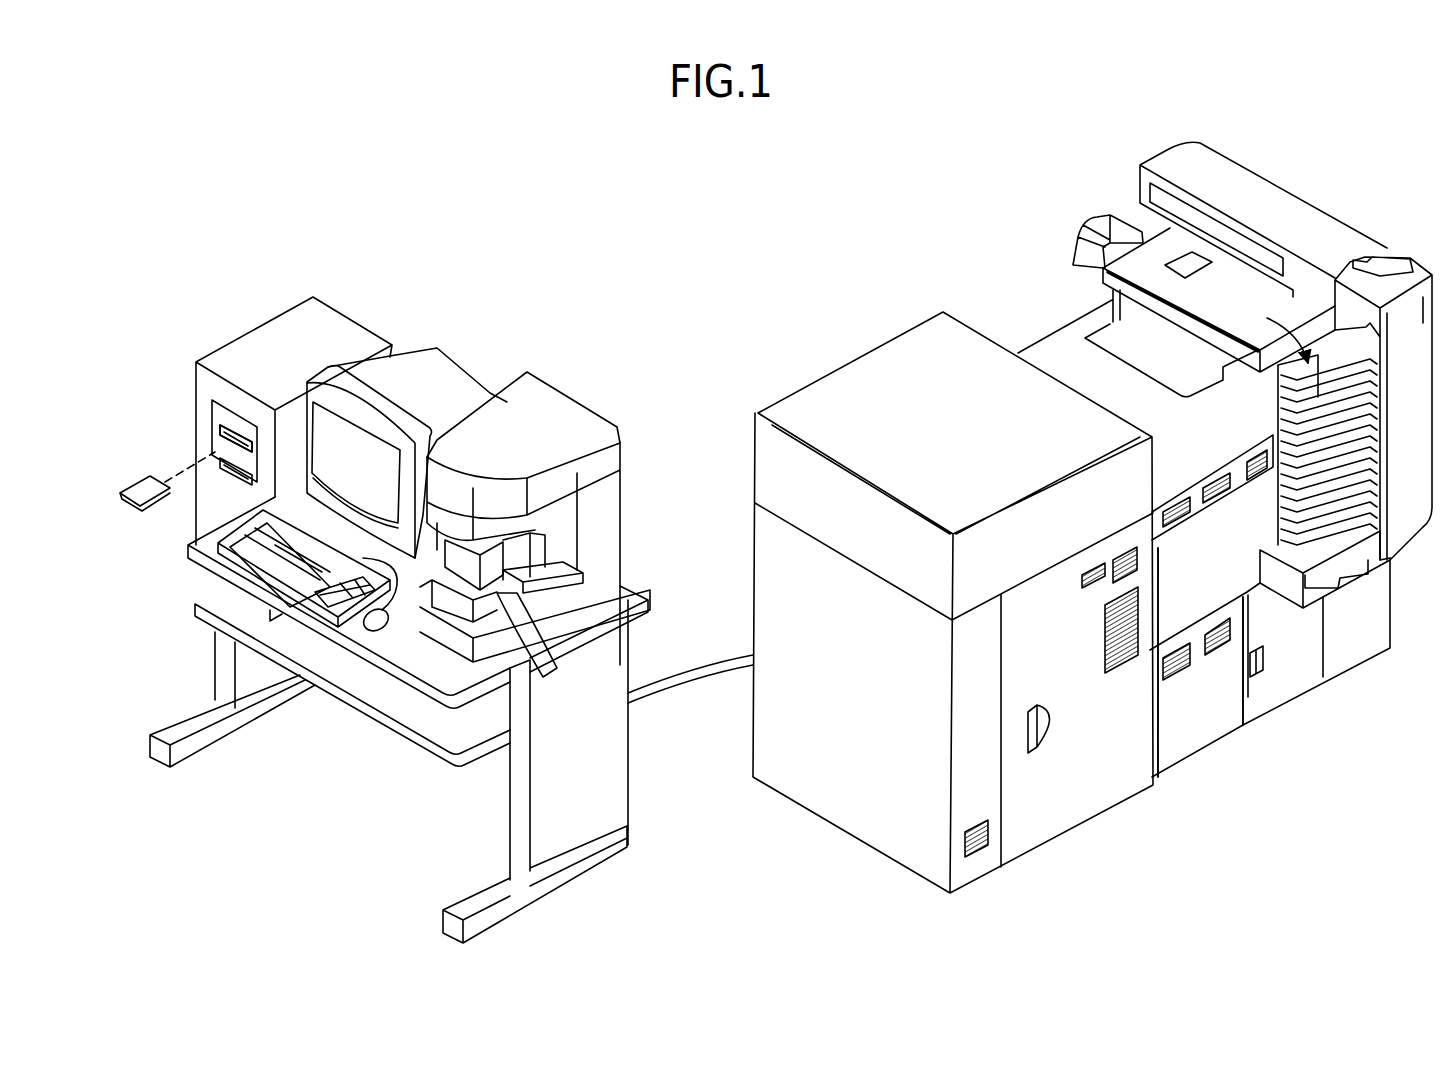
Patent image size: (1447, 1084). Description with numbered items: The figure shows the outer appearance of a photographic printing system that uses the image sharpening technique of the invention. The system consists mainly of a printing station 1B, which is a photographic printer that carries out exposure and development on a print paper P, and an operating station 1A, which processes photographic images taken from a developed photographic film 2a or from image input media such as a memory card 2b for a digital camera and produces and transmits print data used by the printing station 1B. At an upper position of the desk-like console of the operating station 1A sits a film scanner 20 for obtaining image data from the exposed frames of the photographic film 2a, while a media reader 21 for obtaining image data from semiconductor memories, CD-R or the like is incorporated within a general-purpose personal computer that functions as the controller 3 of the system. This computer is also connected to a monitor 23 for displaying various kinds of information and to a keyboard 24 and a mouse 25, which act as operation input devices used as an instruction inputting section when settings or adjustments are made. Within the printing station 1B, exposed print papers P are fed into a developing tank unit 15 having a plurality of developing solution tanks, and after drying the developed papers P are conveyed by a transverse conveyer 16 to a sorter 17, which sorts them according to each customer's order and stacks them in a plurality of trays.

The operating station 1A is at (505, 342).
The printing station 1B is at (845, 343).
The controller 3 is at (272, 342).
The film scanner 20 is at (547, 410).
The media reader 21 is at (228, 439).
The photographic film 2a is at (548, 668).
The memory card 2b is at (143, 507).
The monitor 23 is at (437, 348).
The keyboard 24 is at (305, 600).
The mouse 25 is at (362, 628).
The developing tank unit 15 is at (1213, 702).
The transverse conveyer 16 is at (1137, 260).
The sorter 17 is at (1392, 252).
The print paper P is at (1189, 266).